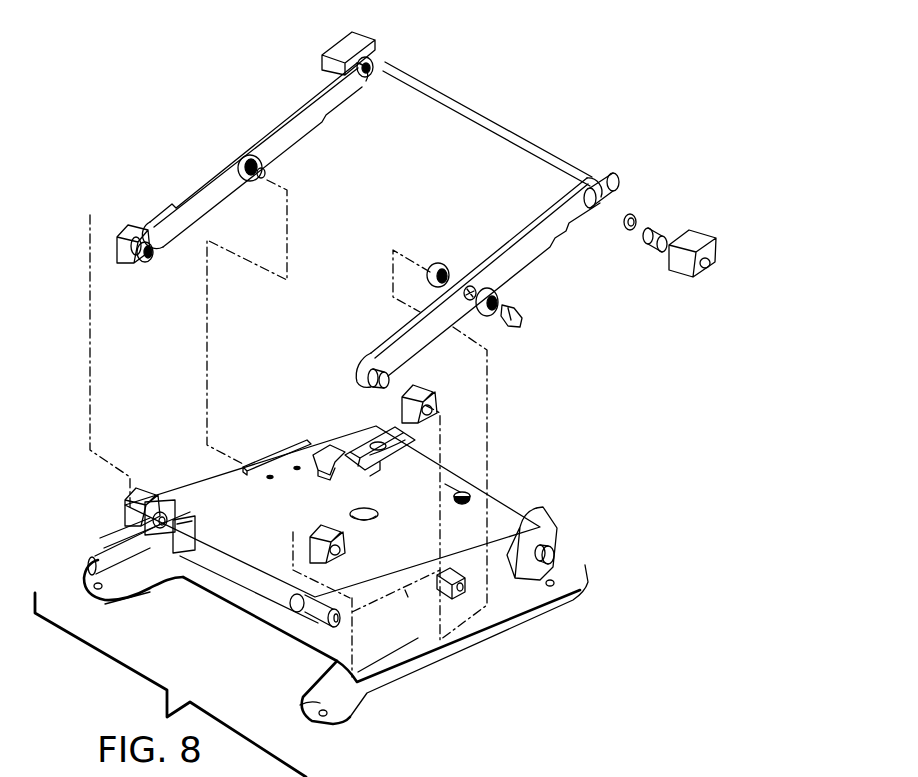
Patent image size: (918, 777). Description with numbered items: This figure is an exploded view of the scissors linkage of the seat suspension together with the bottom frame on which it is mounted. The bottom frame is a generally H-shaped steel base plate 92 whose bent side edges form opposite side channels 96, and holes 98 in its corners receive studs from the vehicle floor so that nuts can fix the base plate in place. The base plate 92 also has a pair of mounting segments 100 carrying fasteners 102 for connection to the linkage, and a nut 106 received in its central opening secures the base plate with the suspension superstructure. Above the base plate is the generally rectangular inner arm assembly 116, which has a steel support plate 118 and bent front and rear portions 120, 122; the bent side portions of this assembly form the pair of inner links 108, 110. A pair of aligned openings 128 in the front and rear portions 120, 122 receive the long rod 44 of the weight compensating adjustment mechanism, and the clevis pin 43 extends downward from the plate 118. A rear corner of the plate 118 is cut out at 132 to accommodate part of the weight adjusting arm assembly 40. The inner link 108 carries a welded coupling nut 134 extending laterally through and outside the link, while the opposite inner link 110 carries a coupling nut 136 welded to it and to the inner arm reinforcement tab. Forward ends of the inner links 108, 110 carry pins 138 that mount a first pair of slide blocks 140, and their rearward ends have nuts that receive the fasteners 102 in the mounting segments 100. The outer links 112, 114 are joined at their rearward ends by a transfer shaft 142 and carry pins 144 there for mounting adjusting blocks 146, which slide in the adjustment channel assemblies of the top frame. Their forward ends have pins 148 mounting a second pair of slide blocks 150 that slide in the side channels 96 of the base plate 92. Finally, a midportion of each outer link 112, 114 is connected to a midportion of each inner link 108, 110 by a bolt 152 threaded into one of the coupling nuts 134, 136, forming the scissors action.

The weight adjusting arm assembly 40 is at (357, 447).
The clevis pin 43 is at (463, 493).
The long rod 44 is at (173, 550).
The base plate 92 is at (280, 617).
The side channels 96 is at (93, 550).
The holes 98 is at (98, 590).
The mounting segments 100 is at (550, 530).
The fasteners 102 is at (557, 550).
The nut 106 is at (370, 520).
The inner link 108 is at (408, 595).
The inner link 110 is at (197, 493).
The outer link 112 is at (530, 253).
The outer link 114 is at (278, 124).
The inner arm assembly 116 is at (255, 520).
The support plate 118 is at (332, 511).
The front portion 120 is at (245, 580).
The rear portion 122 is at (453, 473).
The aligned openings 128 is at (190, 547).
The cut out 132 is at (337, 457).
The coupling nut 134 is at (463, 593).
The coupling nut 136 is at (240, 467).
The pins 138 is at (157, 510).
The slide blocks 140 is at (323, 530).
The transfer shaft 142 is at (499, 112).
The pins 144 is at (369, 73).
The adjusting blocks 146 is at (343, 43).
The pins 148 is at (153, 255).
The slide blocks 150 is at (133, 227).
The bolt 152 is at (267, 172).